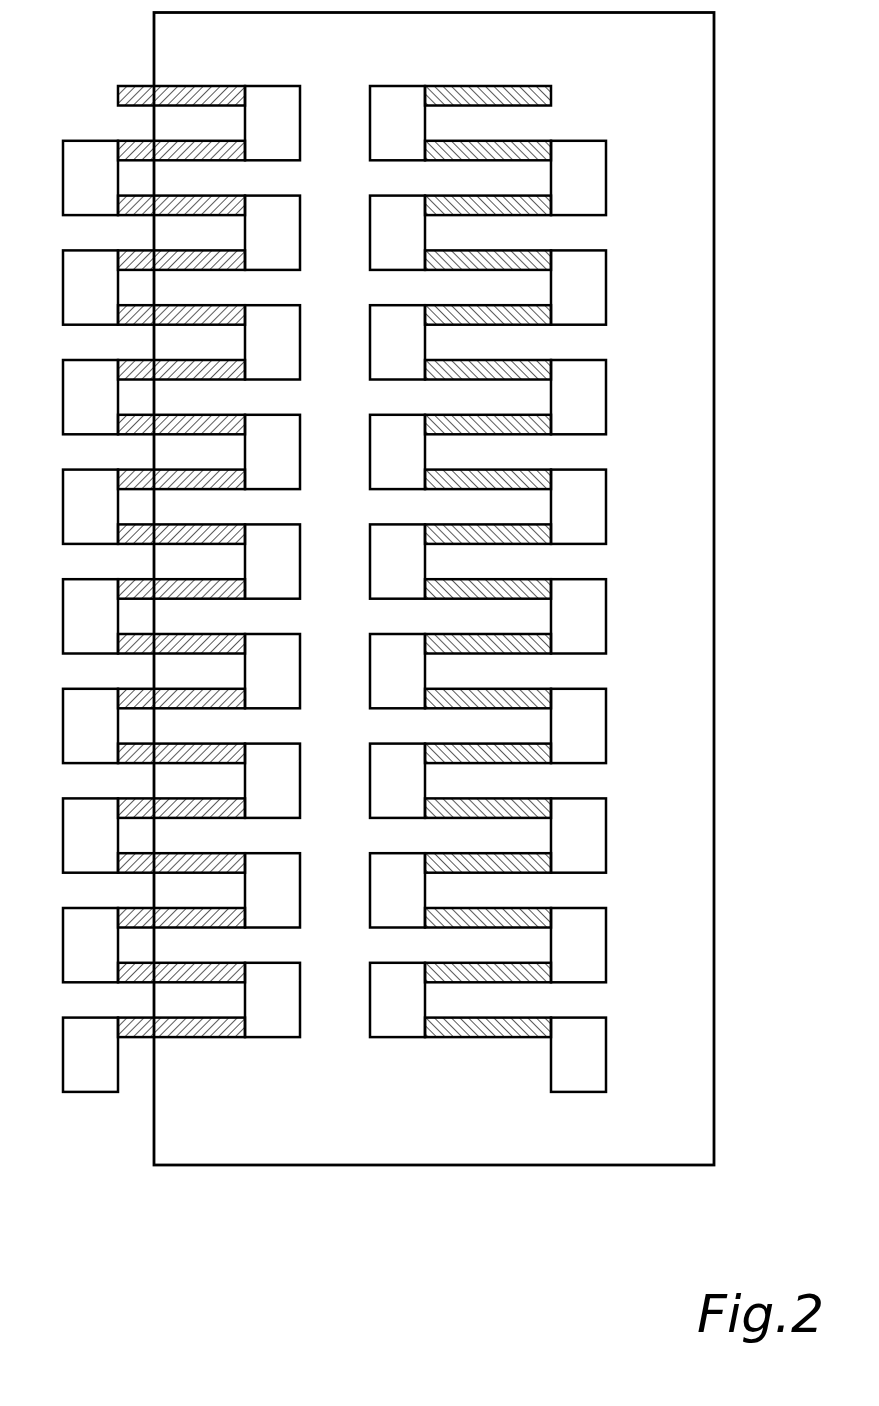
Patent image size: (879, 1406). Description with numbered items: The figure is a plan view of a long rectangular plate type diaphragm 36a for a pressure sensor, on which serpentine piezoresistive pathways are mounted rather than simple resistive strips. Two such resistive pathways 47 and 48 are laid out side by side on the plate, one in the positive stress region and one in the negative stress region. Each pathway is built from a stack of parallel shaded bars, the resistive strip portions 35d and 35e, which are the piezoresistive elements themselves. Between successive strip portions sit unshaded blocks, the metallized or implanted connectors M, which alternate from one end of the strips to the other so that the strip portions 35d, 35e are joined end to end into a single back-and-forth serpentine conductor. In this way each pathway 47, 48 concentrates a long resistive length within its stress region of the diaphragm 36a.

The substrate 36a is at (698, 1155).
The resistive pathway 48 is at (118, 90).
The resistive pathway 47 is at (552, 97).
The left electrode pads 35e is at (270, 1038).
The resistive strip portions 35d is at (488, 680).
The metallized or implanted connectors M is at (578, 1094).